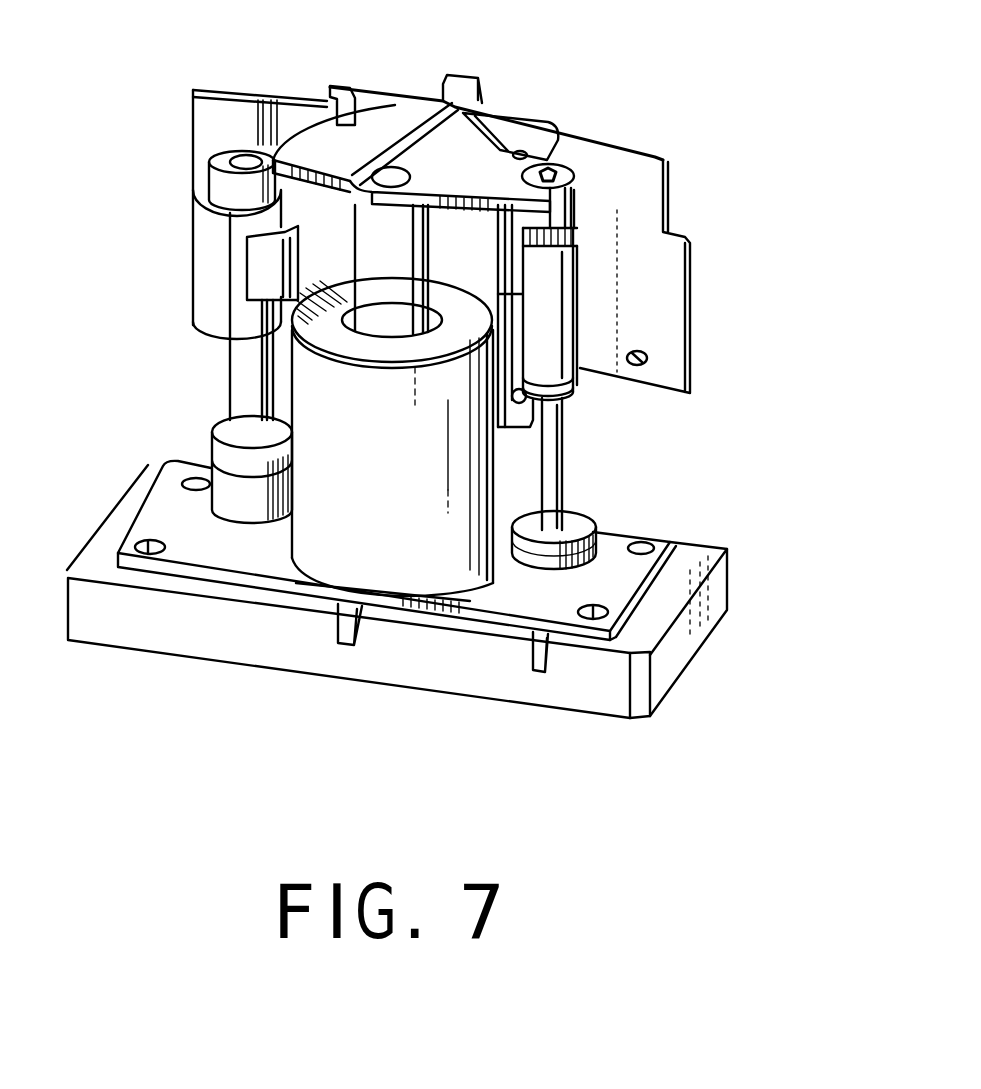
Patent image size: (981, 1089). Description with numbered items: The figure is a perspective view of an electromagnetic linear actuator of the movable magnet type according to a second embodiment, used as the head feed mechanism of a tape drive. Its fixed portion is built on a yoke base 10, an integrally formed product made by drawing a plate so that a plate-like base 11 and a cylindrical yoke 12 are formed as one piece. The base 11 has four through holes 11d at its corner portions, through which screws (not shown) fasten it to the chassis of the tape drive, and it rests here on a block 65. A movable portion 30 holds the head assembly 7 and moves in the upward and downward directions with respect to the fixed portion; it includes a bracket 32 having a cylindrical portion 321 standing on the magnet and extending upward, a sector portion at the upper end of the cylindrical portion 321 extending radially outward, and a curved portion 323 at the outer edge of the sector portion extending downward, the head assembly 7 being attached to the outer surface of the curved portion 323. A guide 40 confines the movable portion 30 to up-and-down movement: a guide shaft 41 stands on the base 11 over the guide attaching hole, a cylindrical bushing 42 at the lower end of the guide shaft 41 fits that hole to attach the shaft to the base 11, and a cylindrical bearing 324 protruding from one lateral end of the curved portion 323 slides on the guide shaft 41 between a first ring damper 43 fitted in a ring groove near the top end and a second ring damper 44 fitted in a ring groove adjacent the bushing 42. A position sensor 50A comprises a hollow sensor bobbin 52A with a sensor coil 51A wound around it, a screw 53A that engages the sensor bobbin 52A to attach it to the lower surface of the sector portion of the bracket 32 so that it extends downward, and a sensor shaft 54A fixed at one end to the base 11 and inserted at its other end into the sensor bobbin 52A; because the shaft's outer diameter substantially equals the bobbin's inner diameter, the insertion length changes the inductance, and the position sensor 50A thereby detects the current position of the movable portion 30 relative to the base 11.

The head assembly 7 is at (647, 192).
The movable portion 30 is at (490, 133).
The bracket 32 is at (325, 140).
The curved portion 323 is at (467, 258).
The screw 53A is at (563, 173).
The sensor coil 51A is at (567, 310).
The position sensor 50A is at (580, 448).
The sensor bobbin 52A is at (580, 390).
The sensor shaft 54A is at (568, 485).
The first ring damper 43 is at (203, 197).
The cylindrical bearing 324 is at (203, 250).
The cylindrical portion 321 is at (367, 250).
The guide 40 is at (155, 347).
The guide shaft 41 is at (233, 387).
The second ring damper 44 is at (218, 458).
The cylindrical bushing 42 is at (257, 510).
The yoke base 10 is at (407, 583).
The cylindrical yoke 12 is at (303, 533).
The base 11 is at (513, 593).
The through holes 11d is at (608, 604).
The base block 65 is at (600, 697).